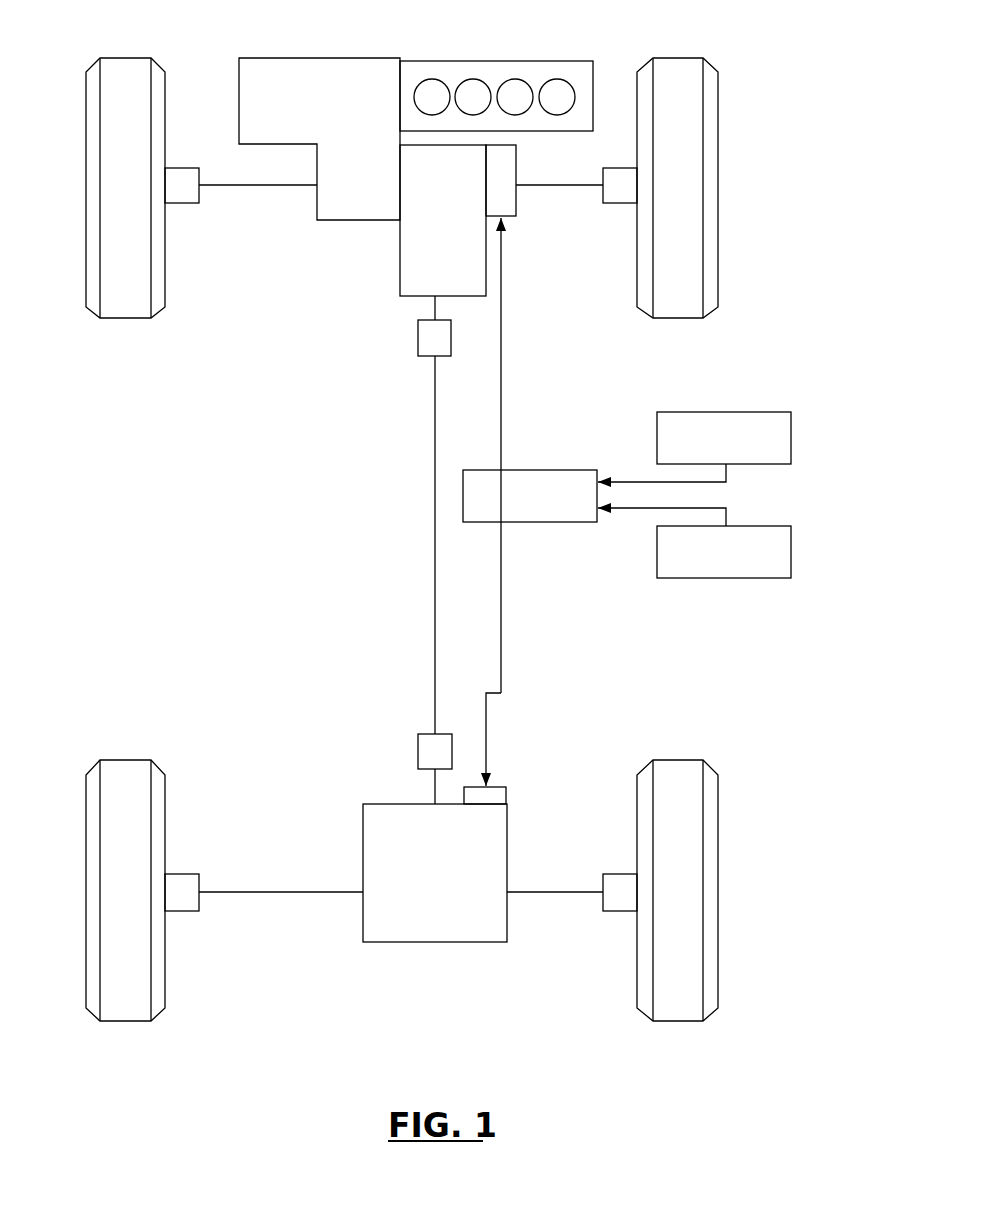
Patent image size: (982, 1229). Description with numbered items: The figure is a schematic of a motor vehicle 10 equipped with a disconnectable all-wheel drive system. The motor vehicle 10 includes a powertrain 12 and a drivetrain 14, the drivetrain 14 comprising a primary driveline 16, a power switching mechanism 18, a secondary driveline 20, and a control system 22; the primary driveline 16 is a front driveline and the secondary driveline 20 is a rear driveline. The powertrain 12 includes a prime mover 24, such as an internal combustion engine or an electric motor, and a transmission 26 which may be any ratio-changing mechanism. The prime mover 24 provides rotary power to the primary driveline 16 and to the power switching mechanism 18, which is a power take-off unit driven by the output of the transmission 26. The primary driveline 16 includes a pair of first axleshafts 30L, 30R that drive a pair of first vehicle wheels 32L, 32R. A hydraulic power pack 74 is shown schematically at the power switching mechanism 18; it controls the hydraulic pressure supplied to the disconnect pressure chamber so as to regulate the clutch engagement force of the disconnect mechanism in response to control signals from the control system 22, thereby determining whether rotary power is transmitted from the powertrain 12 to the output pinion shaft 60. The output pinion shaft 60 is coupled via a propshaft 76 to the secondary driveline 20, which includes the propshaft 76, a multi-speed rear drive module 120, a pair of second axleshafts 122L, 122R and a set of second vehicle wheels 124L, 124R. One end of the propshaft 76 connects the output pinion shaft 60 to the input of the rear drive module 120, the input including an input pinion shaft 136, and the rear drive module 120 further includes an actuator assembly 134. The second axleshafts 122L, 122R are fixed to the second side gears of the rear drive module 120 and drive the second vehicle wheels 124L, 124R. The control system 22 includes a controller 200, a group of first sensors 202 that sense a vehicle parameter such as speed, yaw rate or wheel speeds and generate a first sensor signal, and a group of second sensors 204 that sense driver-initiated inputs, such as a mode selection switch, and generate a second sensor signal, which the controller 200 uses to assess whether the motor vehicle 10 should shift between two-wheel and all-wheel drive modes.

The motor vehicle 10 is at (168, 408).
The powertrain 12 is at (455, 60).
The drivetrain 14 is at (242, 626).
The primary driveline 16 is at (310, 200).
The power switching mechanism 18 is at (388, 283).
The secondary driveline 20 is at (356, 965).
The control system 22 is at (642, 392).
The prime mover 24 is at (578, 68).
The transmission 26 is at (313, 58).
The first axleshaft 30L is at (287, 185).
The first axleshaft 30R is at (527, 185).
The first vehicle wheel 32L is at (125, 72).
The first vehicle wheel 32R is at (680, 72).
The output pinion shaft 60 is at (433, 305).
The hydraulic power pack 74 is at (503, 200).
The propshaft 76 is at (434, 445).
The rear drive module 120 is at (485, 945).
The second axleshaft 122L is at (270, 892).
The second axleshaft 122R is at (547, 892).
The second vehicle wheel 124L is at (122, 770).
The second vehicle wheel 124R is at (675, 773).
The actuator assembly 134 is at (498, 800).
The input pinion shaft 136 is at (432, 787).
The controller 200 is at (556, 523).
The first sensors 202 is at (733, 578).
The second sensors 204 is at (791, 435).